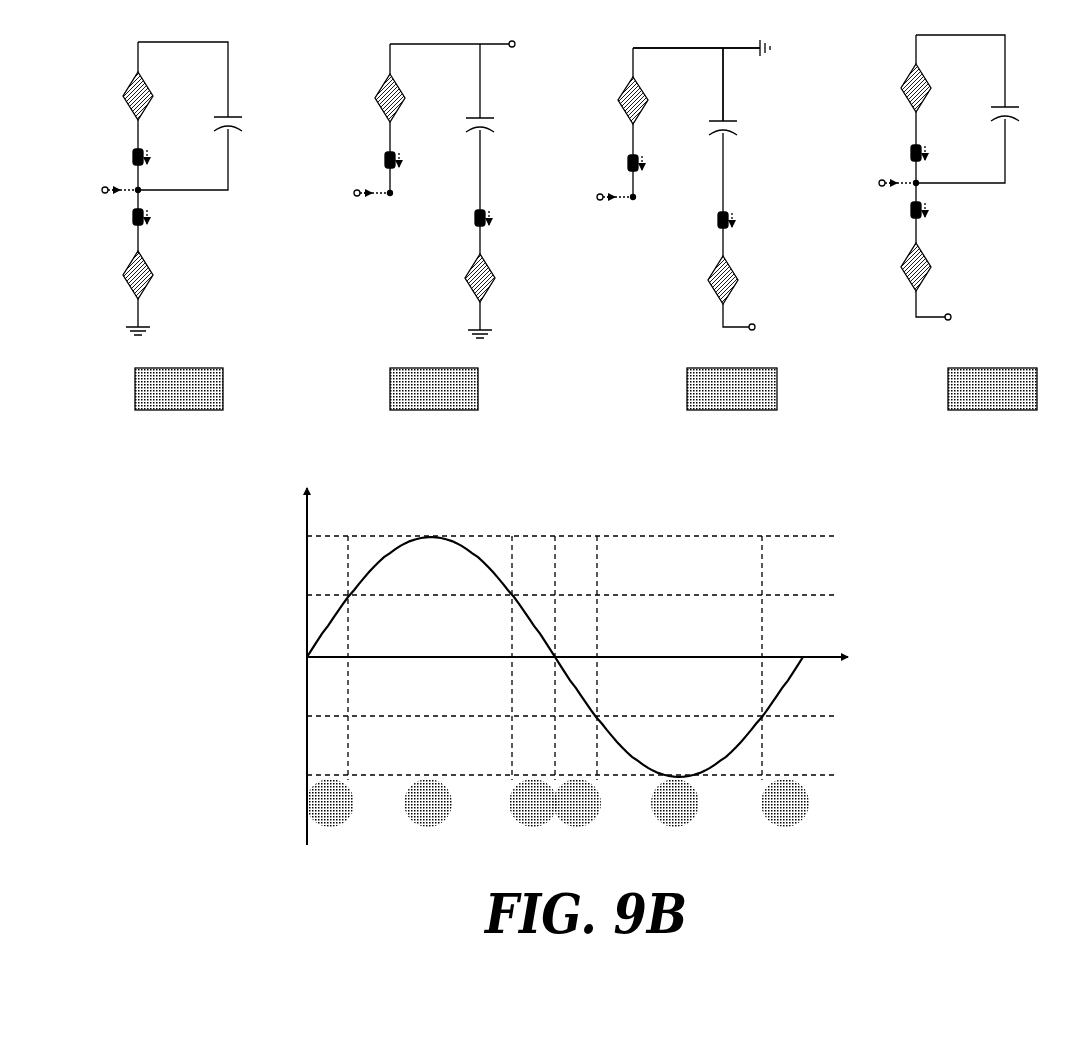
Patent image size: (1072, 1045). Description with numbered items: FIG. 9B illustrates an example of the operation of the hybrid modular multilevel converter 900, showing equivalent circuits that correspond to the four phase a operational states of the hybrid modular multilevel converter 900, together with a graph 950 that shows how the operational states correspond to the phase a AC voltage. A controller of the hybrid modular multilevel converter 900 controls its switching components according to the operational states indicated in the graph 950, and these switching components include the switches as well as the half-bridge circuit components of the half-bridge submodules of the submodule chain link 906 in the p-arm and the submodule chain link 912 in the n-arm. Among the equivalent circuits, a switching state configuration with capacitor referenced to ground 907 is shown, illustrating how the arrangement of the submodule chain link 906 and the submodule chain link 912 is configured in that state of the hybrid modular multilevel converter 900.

The hybrid modular multilevel converter 900 is at (250, 285).
The submodule chain link 906 is at (124, 82).
The switching state configuration with capacitor referenced to ground 907 is at (561, 124).
The submodule chain link 912 is at (116, 282).
The graph 950 is at (169, 538).